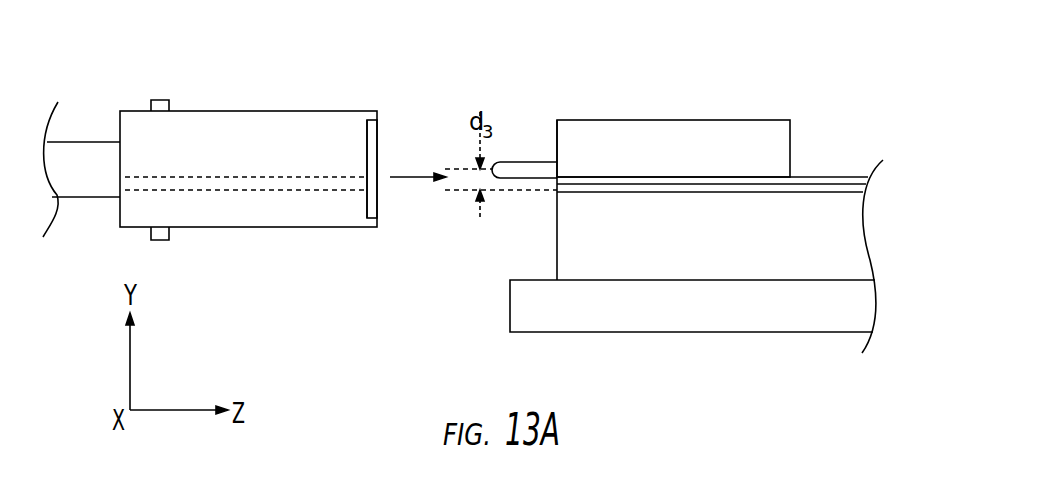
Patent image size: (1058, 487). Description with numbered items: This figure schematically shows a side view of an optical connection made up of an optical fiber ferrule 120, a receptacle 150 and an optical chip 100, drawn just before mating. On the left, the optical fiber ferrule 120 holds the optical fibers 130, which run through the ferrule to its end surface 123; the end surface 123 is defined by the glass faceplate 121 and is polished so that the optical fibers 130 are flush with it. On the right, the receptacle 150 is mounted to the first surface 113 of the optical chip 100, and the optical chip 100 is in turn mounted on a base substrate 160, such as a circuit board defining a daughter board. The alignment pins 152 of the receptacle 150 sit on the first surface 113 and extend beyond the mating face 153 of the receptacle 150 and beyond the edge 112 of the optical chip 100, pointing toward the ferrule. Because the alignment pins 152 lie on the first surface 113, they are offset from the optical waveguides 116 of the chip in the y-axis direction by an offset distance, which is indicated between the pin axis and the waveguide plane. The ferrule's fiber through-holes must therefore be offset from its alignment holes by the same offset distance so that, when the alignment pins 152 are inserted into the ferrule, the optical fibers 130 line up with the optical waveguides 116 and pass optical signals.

The optical chip 100 is at (860, 158).
The edge of the optical chip 112 is at (556, 246).
The first surface 113 is at (807, 176).
The optical waveguides 116 is at (689, 205).
The optical fiber ferrule 120 is at (276, 82).
The glass faceplate 121 is at (379, 156).
The end surface 123 is at (381, 131).
The optical fibers 130 is at (233, 197).
The receptacle 150 is at (675, 97).
The alignment pins 152 is at (519, 150).
The mating face 153 is at (557, 129).
The base substrate 160 is at (898, 310).